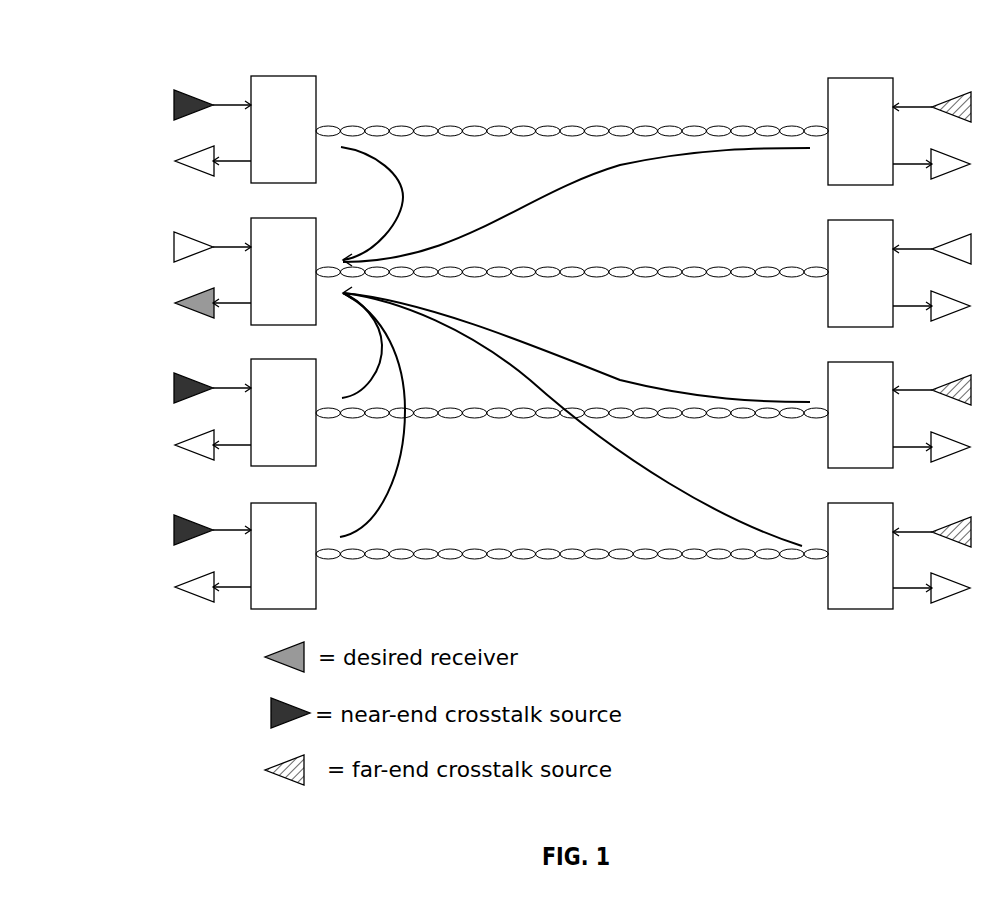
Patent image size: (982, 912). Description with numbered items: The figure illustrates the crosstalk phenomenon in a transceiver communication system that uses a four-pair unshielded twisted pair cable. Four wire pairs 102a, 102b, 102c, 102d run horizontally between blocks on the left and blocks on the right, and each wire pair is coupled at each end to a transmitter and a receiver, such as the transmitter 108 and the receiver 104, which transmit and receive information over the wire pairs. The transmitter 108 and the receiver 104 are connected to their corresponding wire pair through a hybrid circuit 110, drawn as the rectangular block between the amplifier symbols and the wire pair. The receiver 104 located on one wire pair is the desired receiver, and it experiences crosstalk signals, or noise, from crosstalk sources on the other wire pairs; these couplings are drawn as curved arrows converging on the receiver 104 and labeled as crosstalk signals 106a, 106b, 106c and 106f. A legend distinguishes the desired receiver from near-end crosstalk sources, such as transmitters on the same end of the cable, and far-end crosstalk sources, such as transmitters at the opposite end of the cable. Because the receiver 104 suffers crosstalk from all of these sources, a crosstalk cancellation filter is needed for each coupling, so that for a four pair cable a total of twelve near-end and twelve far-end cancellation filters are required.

The hybrid circuit 110 is at (283, 83).
The transmitter 108 is at (173, 107).
The receiver 104 is at (180, 302).
The wire pair 102a is at (763, 130).
The wire pair 102b is at (747, 270).
The wire pair 102c is at (765, 415).
The wire pair 102d is at (813, 558).
The crosstalk signal 106a is at (402, 184).
The crosstalk signal 106b is at (622, 165).
The crosstalk signal 106c is at (668, 395).
The crosstalk signal 106f is at (371, 387).